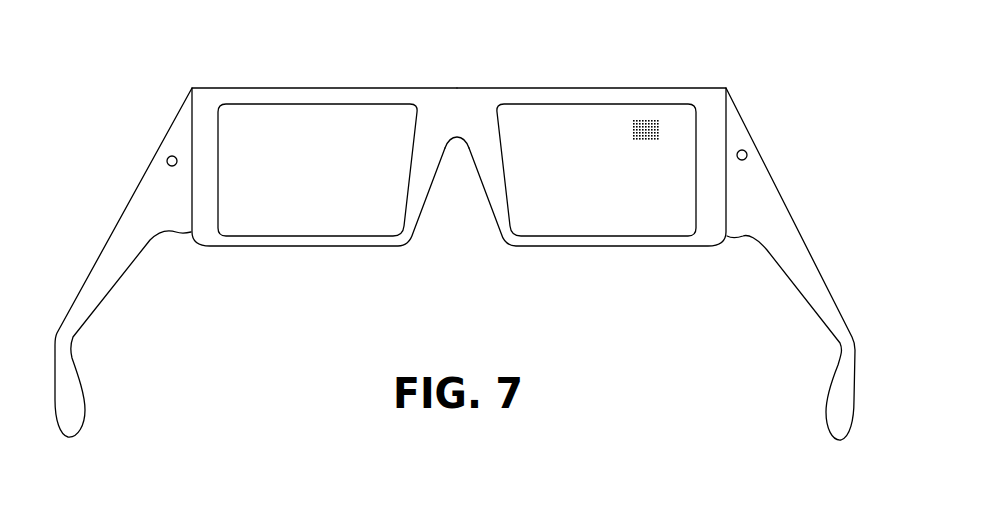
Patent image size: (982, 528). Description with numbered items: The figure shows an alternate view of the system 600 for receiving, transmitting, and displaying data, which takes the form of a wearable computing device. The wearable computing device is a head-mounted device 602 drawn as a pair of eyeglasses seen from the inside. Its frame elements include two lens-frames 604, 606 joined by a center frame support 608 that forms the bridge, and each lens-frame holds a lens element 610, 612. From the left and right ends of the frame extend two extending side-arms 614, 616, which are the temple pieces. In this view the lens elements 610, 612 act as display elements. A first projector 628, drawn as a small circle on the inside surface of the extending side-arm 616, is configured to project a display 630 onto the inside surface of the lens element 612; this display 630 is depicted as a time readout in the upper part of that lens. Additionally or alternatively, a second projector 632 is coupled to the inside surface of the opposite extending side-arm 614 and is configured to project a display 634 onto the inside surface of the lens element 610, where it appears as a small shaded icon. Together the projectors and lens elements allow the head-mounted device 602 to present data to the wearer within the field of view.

The system 600 is at (700, 357).
The head-mounted device 602 is at (238, 70).
The lens-frame 604 is at (683, 248).
The lens-frame 606 is at (242, 248).
The center frame support 608 is at (457, 88).
The lens element 610 is at (563, 225).
The lens element 612 is at (335, 225).
The extending side-arm 614 is at (782, 194).
The extending side-arm 616 is at (113, 230).
The first projector 628 is at (166, 158).
The display 630 is at (309, 137).
The second projector 632 is at (742, 150).
The display 634 is at (636, 136).